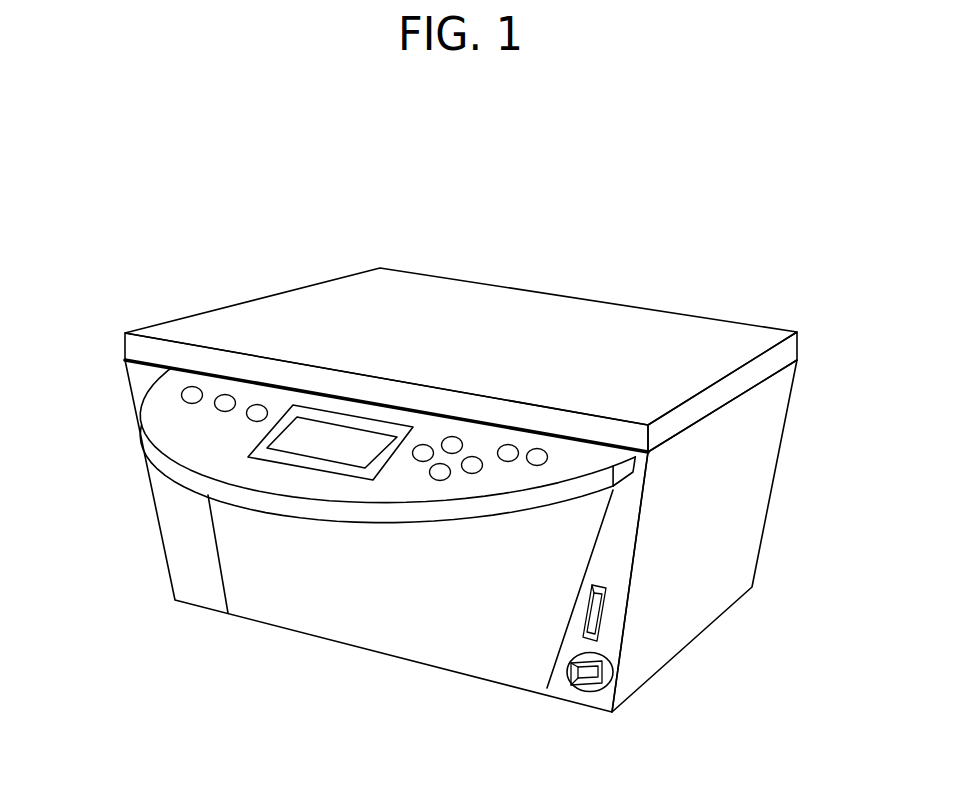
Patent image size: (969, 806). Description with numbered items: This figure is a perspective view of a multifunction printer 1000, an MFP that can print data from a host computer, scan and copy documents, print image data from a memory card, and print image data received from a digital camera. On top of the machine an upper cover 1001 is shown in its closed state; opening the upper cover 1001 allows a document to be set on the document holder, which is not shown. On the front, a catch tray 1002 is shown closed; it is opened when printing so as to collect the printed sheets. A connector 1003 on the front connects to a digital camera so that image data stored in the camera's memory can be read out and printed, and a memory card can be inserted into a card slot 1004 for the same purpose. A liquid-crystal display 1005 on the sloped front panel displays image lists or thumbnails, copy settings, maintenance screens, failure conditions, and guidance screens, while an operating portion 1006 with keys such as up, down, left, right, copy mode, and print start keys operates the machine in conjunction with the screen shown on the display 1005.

The multifunction printer 1000 is at (747, 483).
The upper cover 1001 is at (623, 323).
The catch tray 1002 is at (263, 568).
The connector 1003 is at (612, 658).
The card slot 1004 is at (608, 602).
The liquid-crystal display 1005 is at (333, 440).
The operating portion 1006 is at (222, 396).